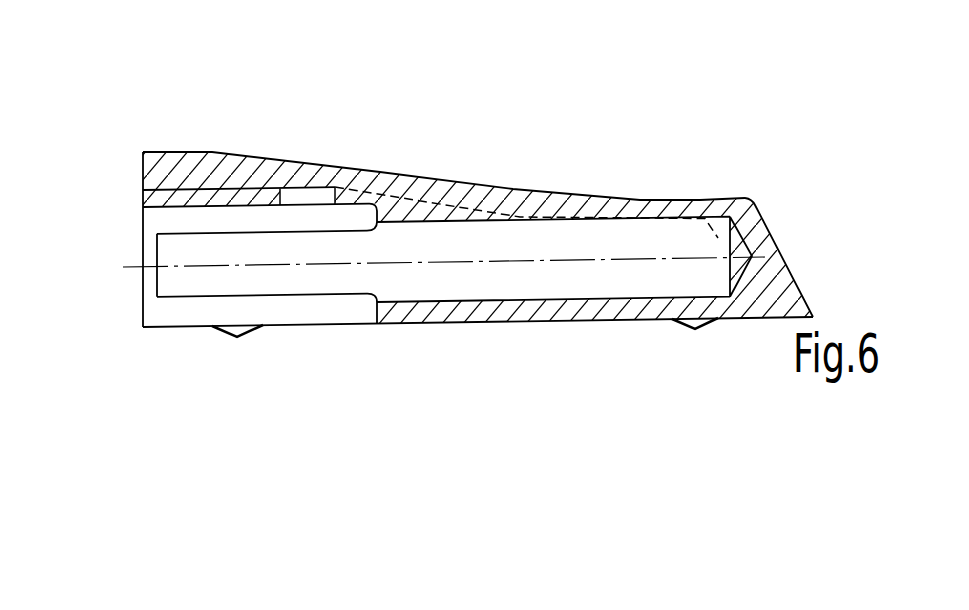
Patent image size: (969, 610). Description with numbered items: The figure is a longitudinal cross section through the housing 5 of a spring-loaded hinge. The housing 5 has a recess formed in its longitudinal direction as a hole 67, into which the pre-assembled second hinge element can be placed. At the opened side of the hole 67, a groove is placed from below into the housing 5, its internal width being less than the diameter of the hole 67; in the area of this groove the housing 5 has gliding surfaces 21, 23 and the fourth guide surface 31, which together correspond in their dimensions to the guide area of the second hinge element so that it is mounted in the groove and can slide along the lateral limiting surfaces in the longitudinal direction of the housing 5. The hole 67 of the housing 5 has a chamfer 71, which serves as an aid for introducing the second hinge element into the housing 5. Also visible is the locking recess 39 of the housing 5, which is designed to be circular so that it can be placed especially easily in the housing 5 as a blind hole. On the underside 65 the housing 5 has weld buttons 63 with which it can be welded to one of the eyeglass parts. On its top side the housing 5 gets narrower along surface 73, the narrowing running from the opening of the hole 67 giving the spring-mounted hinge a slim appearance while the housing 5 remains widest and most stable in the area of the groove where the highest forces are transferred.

The housing 5 is at (723, 186).
The gliding surface 21 is at (239, 212).
The gliding surface 23 is at (307, 312).
The fourth guide surface 31 is at (180, 210).
The locking recess 39 is at (322, 186).
The weld buttons 63 is at (230, 333).
The underside 65 is at (502, 321).
The hole 67 is at (490, 250).
The chamfer 71 is at (153, 297).
The surface 73 is at (431, 176).